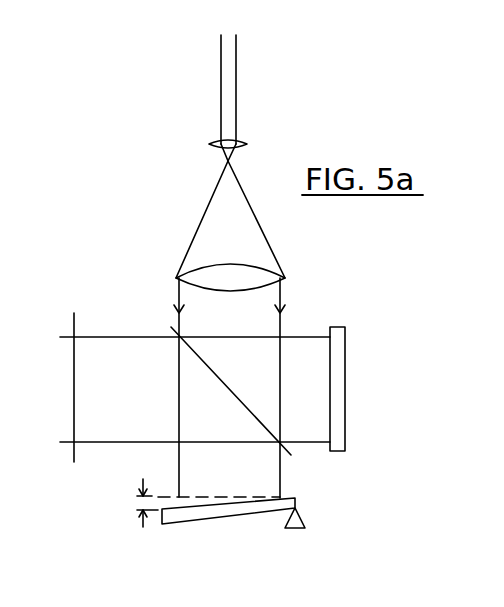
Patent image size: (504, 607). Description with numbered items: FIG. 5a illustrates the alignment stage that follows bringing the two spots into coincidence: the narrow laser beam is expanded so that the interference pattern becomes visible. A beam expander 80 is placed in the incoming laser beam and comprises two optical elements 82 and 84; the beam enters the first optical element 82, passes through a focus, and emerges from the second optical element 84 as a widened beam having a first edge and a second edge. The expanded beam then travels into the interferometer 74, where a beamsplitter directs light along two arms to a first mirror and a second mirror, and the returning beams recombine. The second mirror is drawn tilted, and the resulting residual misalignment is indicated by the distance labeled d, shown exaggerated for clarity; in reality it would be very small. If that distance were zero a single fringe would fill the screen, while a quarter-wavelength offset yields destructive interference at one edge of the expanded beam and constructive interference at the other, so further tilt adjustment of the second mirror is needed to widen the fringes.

The interferometer 74 is at (73, 408).
The beam expander 80 is at (180, 240).
The optical element 82 is at (239, 145).
The optical element 84 is at (287, 281).